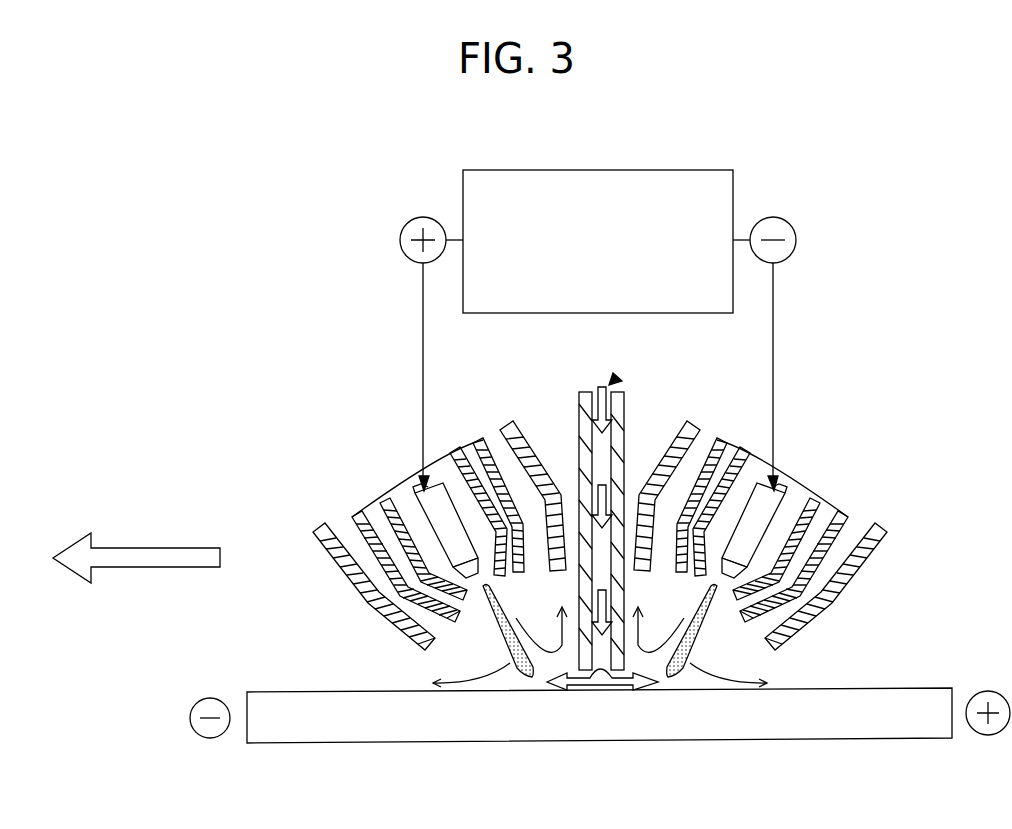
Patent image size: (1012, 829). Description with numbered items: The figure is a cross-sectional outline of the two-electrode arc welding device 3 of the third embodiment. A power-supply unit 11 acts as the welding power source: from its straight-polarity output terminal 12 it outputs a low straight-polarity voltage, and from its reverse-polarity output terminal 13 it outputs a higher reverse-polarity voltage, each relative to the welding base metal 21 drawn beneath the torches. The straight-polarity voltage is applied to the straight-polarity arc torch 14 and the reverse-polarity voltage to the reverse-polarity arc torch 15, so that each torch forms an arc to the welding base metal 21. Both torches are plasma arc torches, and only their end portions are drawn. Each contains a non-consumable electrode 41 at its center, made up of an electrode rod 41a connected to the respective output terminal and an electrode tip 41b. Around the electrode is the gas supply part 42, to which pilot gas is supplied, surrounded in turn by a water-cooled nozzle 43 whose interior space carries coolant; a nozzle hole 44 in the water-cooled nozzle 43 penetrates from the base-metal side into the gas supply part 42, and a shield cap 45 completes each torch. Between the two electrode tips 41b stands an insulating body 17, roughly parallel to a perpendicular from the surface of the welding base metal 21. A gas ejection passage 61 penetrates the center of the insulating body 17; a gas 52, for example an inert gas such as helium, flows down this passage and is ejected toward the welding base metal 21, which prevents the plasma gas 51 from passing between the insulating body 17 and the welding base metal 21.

The two-electrode arc welding device 3 is at (899, 313).
The power-supply unit 11 is at (653, 168).
The straight-polarity output terminal 12 is at (773, 216).
The reverse-polarity output terminal 13 is at (423, 216).
The straight-polarity arc torch 14 is at (863, 481).
The reverse-polarity arc torch 15 is at (350, 493).
The insulating body 17 is at (626, 392).
The welding base metal 21 is at (900, 727).
The non-consumable electrode 41 is at (458, 508).
The electrode rod 41a is at (421, 488).
The electrode tip 41b is at (487, 575).
The gas supply part 42 is at (407, 514).
The water-cooled nozzle 43 is at (521, 563).
The nozzle hole 44 is at (492, 617).
The shield cap 45 is at (400, 628).
The plasma gas 51 is at (777, 677).
The gas 52 is at (600, 481).
The gas ejection passage 61 is at (616, 377).